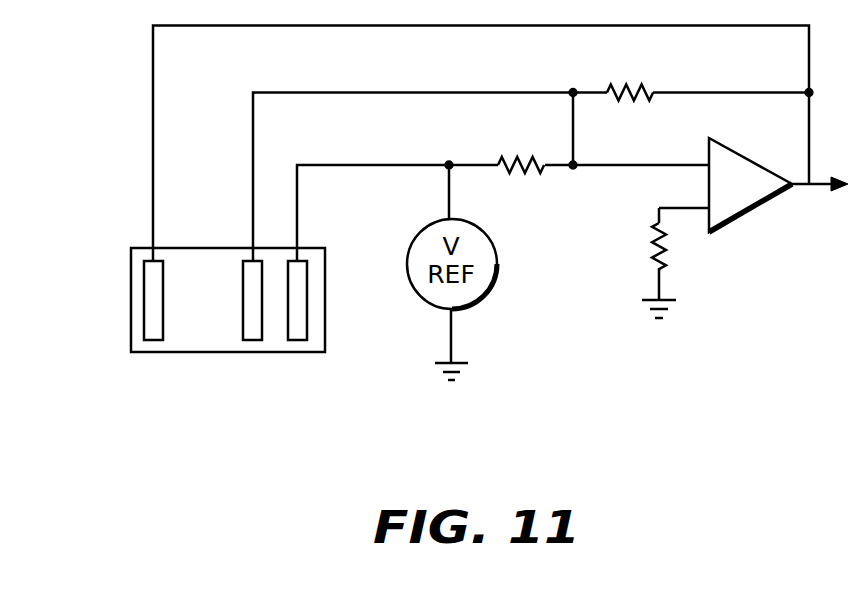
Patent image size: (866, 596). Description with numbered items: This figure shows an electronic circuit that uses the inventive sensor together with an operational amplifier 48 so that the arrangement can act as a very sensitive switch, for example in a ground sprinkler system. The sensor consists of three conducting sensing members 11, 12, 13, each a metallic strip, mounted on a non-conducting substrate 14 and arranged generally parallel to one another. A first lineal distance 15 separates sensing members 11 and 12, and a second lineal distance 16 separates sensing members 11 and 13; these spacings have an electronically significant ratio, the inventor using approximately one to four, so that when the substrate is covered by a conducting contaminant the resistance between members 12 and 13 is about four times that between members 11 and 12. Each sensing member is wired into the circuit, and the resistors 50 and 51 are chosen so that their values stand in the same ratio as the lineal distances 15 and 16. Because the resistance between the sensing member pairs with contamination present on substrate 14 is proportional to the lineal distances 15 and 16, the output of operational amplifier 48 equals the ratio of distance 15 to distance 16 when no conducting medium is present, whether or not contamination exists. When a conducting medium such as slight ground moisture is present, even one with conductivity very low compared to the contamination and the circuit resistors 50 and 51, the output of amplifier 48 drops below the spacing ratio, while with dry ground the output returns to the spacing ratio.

The conducting sensing member 11 is at (253, 337).
The conducting sensing member 12 is at (298, 332).
The conducting sensing member 13 is at (151, 337).
The non-conducting substrate 14 is at (202, 353).
The first lineal distance 15 is at (275, 305).
The second lineal distance 16 is at (205, 297).
The operational amplifier 48 is at (750, 215).
The resistor 50 is at (527, 155).
The resistor 51 is at (633, 80).